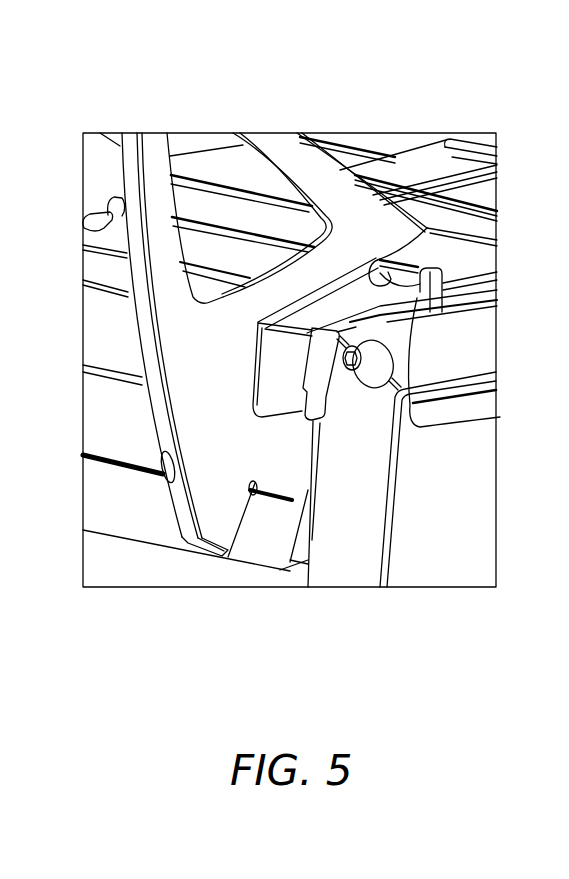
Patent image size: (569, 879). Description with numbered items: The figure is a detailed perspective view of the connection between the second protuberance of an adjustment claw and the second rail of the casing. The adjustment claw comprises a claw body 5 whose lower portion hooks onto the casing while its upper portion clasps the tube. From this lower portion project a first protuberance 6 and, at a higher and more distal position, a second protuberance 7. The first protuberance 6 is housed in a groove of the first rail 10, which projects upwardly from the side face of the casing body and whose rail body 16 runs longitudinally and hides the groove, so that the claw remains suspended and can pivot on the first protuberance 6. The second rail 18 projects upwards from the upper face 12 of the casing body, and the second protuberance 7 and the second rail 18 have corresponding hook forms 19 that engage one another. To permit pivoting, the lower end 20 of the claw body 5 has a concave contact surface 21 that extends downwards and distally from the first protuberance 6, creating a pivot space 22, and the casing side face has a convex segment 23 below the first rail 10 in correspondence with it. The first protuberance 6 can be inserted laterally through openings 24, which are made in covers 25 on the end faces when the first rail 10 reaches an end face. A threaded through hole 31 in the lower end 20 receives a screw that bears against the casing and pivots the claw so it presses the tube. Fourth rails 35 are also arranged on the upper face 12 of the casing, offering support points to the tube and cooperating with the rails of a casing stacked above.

The claw body 5 is at (147, 317).
The first protuberance 6 is at (273, 422).
The second protuberance 7 is at (364, 272).
The first rail 10 is at (100, 343).
The upper face 12 is at (452, 297).
The rail body 16 is at (313, 412).
The second rail 18 is at (500, 417).
The hook forms 19 is at (443, 278).
The lower end 20 is at (217, 530).
The contact surface 21 is at (255, 523).
The pivot space 22 is at (277, 523).
The convex segment 23 is at (110, 510).
The openings 24 is at (300, 452).
The covers 25 is at (457, 357).
The threaded through hole 31 is at (135, 470).
The fourth rails 35 is at (395, 285).